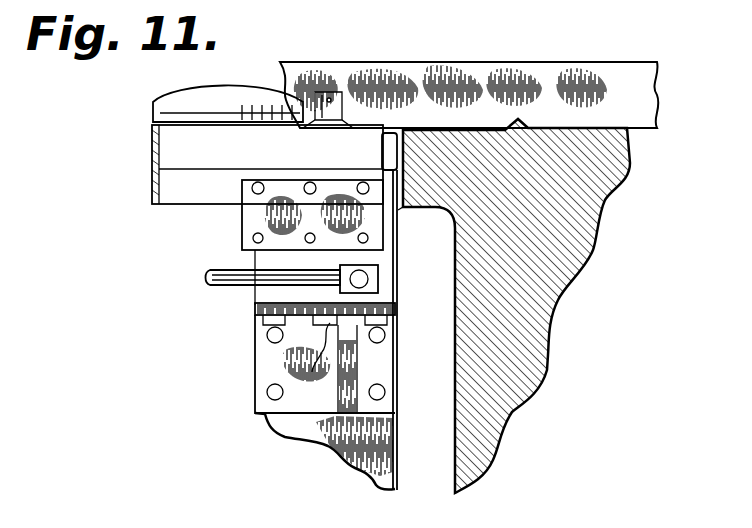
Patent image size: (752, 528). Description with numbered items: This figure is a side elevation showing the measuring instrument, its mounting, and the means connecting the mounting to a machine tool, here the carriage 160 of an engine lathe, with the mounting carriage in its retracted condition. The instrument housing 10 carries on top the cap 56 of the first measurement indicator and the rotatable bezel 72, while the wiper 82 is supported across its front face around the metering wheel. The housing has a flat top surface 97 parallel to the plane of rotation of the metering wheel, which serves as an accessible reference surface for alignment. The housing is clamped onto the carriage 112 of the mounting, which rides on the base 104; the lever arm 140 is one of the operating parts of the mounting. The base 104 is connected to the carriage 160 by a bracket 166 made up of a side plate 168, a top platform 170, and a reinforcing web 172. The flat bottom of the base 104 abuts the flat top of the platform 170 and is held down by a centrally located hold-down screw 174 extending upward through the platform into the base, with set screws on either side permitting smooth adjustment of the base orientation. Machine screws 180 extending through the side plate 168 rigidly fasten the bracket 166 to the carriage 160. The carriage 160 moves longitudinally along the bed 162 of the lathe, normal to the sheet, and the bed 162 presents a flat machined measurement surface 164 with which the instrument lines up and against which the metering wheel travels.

The instrument housing 10 is at (146, 153).
The cap 56 is at (330, 84).
The rotatable bezel 72 is at (144, 109).
The wiper 82 is at (380, 147).
The flat top surface 97 is at (386, 128).
The base 104 is at (277, 259).
The carriage 112 is at (258, 213).
The lever arm 140 is at (235, 278).
The carriage of the engine lathe 160 is at (500, 77).
The bed of the engine lathe 162 is at (578, 203).
The measurement surface 164 is at (398, 210).
The bracket 166 is at (248, 375).
The side plate 168 is at (287, 355).
The top platform 170 is at (258, 308).
The reinforcing web 172 is at (350, 362).
The hold-down screw 174 is at (315, 361).
The machine screws 180 is at (385, 395).